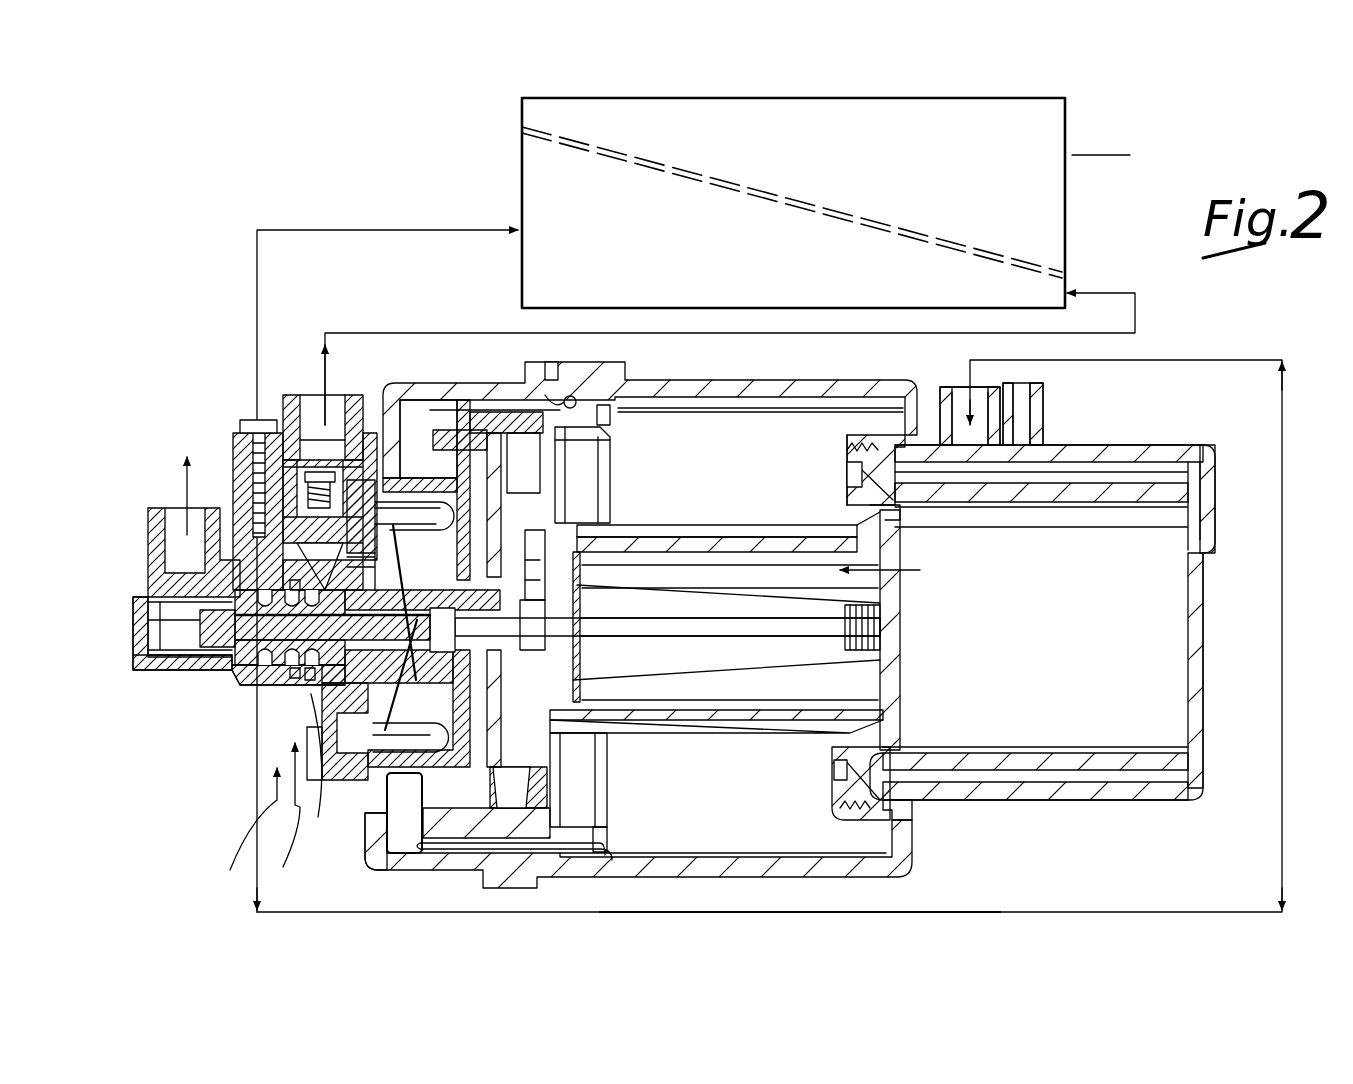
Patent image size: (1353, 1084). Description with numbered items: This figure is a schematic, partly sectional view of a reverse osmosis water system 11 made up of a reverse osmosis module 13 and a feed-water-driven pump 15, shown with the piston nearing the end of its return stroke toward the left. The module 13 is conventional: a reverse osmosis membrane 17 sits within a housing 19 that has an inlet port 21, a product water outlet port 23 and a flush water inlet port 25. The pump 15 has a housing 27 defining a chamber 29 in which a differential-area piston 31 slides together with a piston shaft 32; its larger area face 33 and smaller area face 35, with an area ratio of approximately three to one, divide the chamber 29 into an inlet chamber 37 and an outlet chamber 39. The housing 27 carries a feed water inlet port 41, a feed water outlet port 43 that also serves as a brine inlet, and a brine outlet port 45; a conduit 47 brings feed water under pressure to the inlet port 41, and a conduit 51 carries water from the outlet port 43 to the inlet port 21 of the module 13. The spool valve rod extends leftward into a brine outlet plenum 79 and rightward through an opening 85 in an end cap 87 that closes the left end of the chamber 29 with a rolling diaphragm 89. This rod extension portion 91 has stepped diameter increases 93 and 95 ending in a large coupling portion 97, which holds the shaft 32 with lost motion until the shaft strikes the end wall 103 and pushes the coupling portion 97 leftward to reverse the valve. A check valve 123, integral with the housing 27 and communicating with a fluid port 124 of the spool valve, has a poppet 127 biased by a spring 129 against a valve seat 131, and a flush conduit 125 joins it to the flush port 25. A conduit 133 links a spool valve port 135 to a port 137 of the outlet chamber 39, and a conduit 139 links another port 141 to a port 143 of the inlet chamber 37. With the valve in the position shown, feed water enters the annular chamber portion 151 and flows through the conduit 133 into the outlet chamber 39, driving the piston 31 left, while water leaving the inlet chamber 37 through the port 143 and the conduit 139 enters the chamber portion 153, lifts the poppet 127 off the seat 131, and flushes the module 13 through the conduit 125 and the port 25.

The reverse osmosis water system 11 is at (1292, 604).
The reverse osmosis module 13 is at (1047, 90).
The pump 15 is at (928, 848).
The reverse osmosis filter or membrane 17 is at (766, 198).
The housing 19 is at (520, 131).
The inlet port 21 is at (518, 222).
The product water outlet port 23 is at (1072, 158).
The flush water inlet port 25 is at (1087, 292).
The pump housing 27 is at (742, 386).
The pump chamber 29 is at (736, 822).
The piston 31 is at (762, 717).
The piston shaft 32 is at (741, 623).
The larger area face 33 is at (404, 822).
The smaller area face 35 is at (893, 698).
The inlet chamber 37 is at (410, 413).
The outlet chamber 39 is at (1168, 648).
The feed water inlet port 41 is at (286, 690).
The feed water outlet port 43 is at (230, 545).
The brine outlet port 45 is at (218, 527).
The conduit 47 is at (236, 841).
The conduit 51 is at (366, 226).
The brine outlet plenum 79 is at (172, 672).
The opening 85 is at (557, 500).
The end cap 87 is at (468, 858).
The rolling diaphragm 89 is at (572, 396).
The rod extension portion 91 is at (537, 540).
The stepped diameter increase 93 is at (455, 702).
The stepped diameter increase 95 is at (400, 616).
The coupling portion 97 is at (562, 673).
The chamber wall 103 is at (522, 586).
The check valve 123 is at (276, 402).
The fluid port 124 is at (492, 470).
The flush conduit 125 is at (855, 333).
The poppet 127 is at (292, 490).
The spring 129 is at (327, 480).
The valve seat 131 is at (440, 438).
The conduit 133 is at (805, 911).
The port 135 is at (268, 686).
The port 137 is at (986, 392).
The conduit 139 is at (296, 822).
The port 141 is at (294, 688).
The port 143 is at (368, 815).
The annular chamber portion 151 is at (277, 686).
The annular chamber portion 153 is at (334, 774).